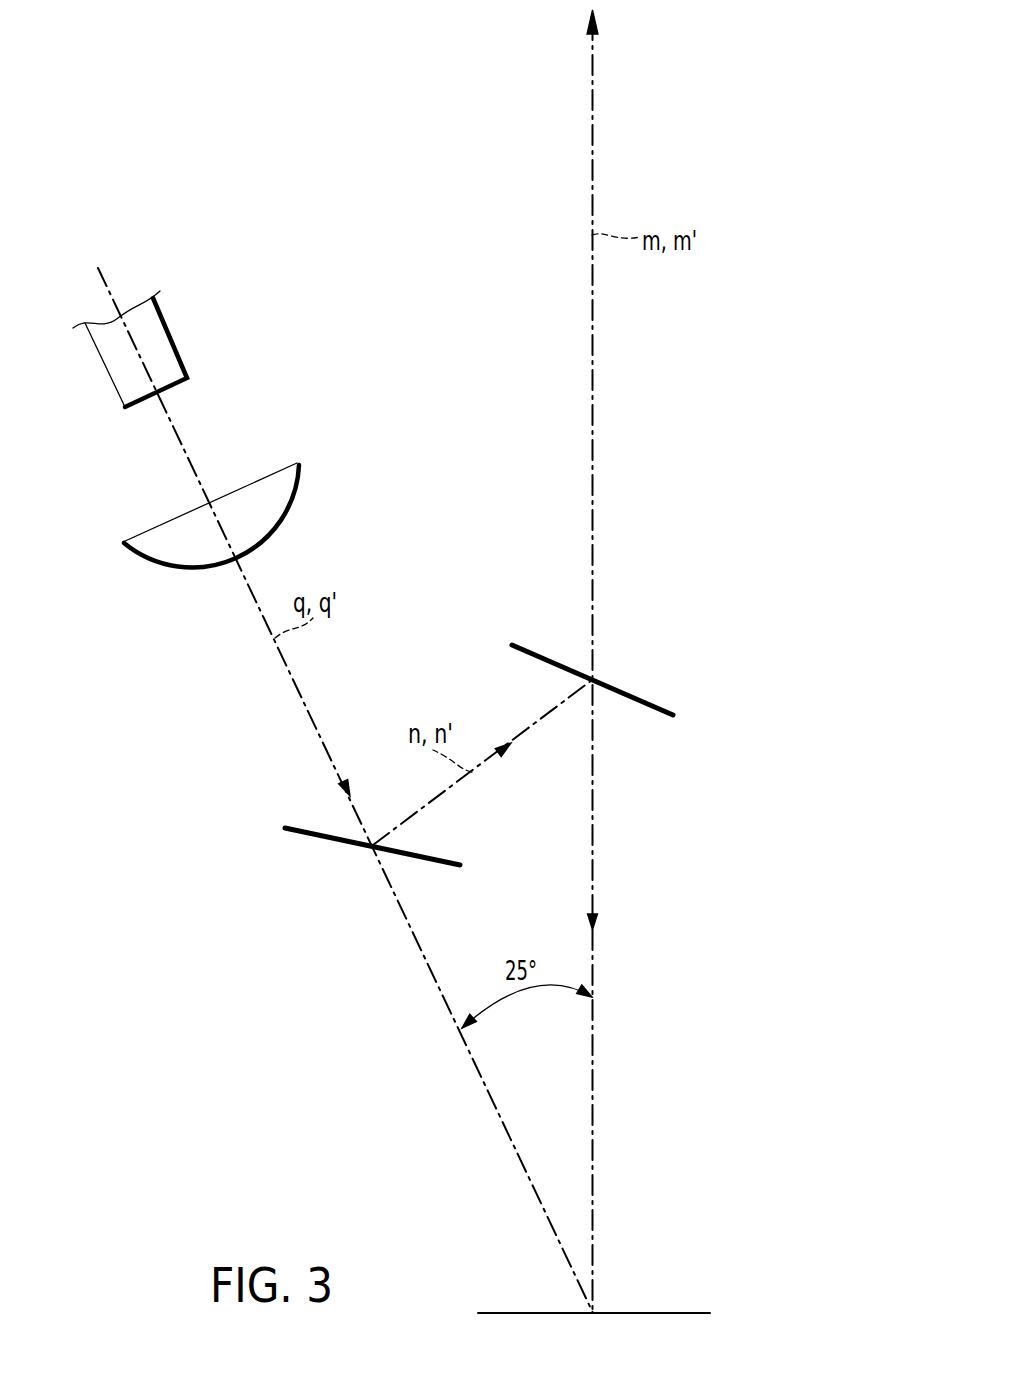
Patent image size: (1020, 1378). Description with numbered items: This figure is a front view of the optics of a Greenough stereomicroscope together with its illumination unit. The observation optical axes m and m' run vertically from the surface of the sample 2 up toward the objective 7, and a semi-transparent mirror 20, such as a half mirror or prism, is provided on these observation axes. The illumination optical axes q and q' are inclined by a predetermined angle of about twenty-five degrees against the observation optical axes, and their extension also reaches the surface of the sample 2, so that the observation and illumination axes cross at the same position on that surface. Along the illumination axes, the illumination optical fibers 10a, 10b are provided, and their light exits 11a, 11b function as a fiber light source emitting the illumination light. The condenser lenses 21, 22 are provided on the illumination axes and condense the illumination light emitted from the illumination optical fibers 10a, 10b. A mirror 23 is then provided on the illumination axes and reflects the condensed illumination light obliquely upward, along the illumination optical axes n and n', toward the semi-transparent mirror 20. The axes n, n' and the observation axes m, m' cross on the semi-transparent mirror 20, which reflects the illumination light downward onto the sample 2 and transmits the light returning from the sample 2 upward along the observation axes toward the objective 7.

The objective 7 is at (652, 661).
The illumination optical fiber 10a is at (163, 350).
The illumination optical fiber 10b is at (175, 367).
The light exit 11a is at (175, 391).
The light exit 11b is at (156, 352).
The condenser lens 21 is at (298, 467).
The condenser lens 22 is at (211, 515).
The semi-transparent mirror 20 is at (627, 688).
The mirror 23 is at (335, 843).
The sample 2 is at (665, 1313).